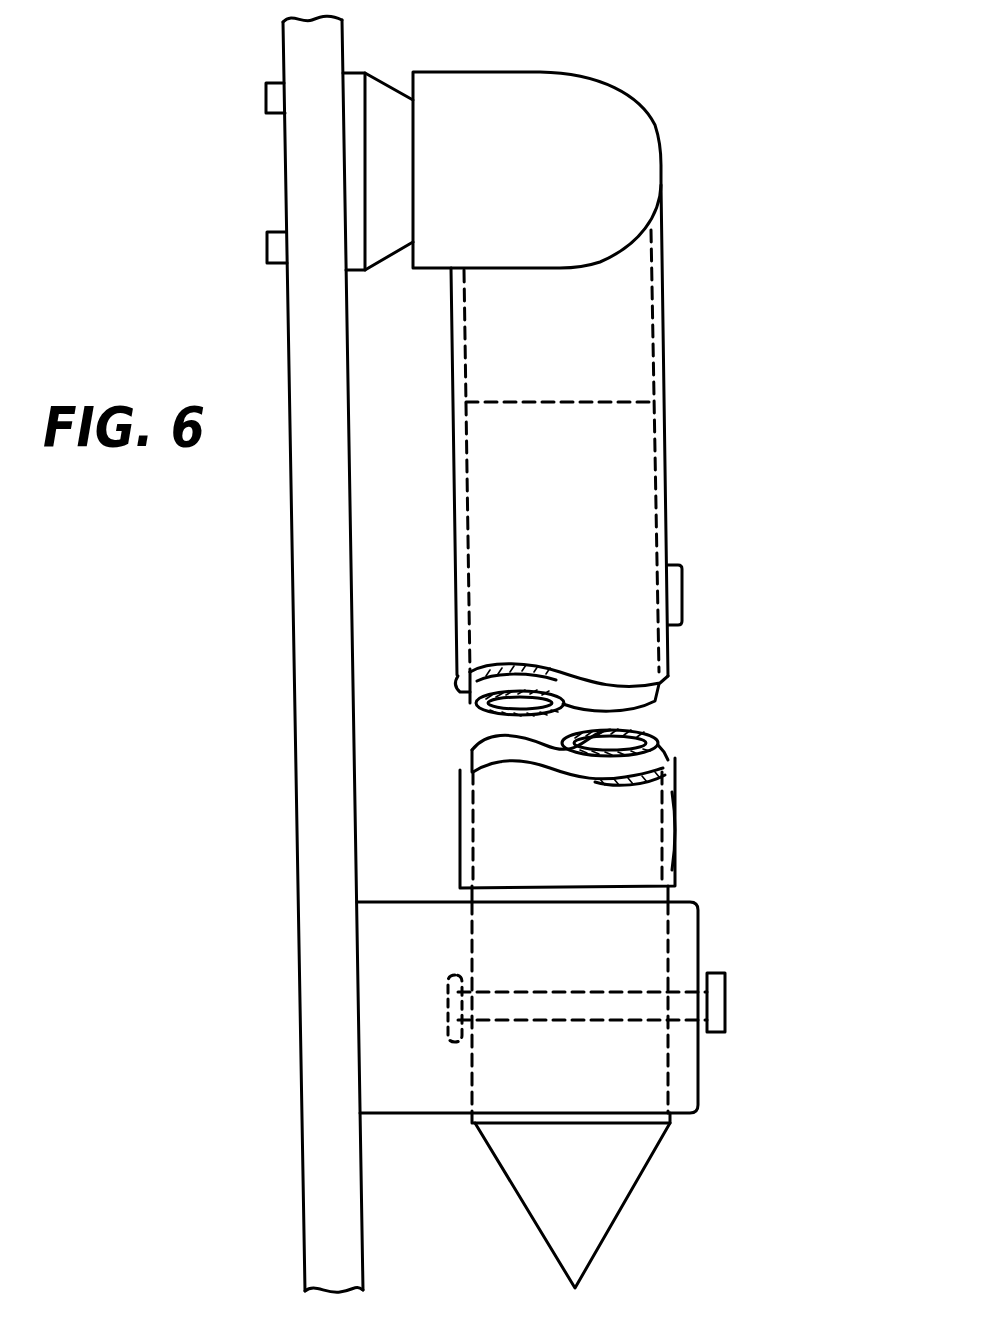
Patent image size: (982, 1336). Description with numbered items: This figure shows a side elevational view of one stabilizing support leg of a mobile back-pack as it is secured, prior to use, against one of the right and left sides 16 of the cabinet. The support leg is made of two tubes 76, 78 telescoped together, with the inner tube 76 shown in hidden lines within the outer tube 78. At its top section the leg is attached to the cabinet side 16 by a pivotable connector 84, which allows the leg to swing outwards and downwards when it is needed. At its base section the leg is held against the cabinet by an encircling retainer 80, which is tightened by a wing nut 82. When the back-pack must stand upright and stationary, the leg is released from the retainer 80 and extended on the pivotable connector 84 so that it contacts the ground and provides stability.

The right and left sides of the cabinet 16 is at (308, 350).
The pivotable connector 84 is at (537, 84).
The tube 78 is at (660, 330).
The tube 76 is at (632, 498).
The encircling retainer 80 is at (700, 1056).
The wing nut 82 is at (726, 992).